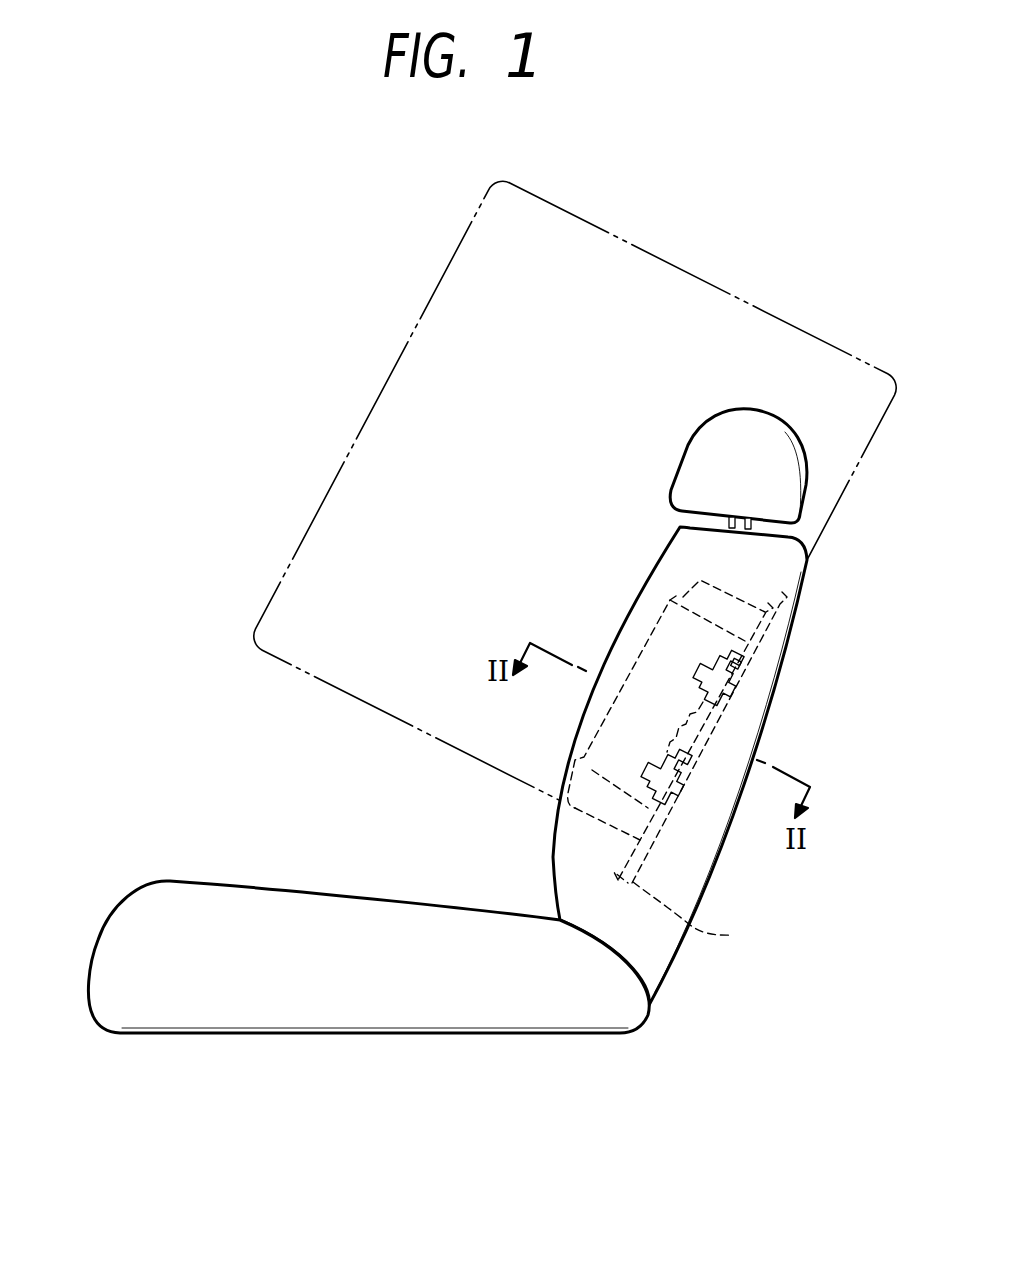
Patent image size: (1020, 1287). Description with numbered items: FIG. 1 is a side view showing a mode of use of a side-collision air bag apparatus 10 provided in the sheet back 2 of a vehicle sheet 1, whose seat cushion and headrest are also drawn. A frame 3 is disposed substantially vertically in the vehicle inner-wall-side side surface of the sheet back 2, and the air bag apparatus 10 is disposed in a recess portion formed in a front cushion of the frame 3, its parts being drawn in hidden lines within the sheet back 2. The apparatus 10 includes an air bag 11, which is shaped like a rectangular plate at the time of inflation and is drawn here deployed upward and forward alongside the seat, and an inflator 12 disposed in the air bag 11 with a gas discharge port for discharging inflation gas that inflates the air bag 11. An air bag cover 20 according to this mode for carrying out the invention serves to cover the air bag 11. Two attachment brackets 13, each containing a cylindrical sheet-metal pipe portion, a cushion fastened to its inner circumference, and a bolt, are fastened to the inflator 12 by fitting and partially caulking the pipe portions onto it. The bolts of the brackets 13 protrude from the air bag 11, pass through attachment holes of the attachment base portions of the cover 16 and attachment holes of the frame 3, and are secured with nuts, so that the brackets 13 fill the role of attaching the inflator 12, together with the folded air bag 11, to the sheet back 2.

The vehicle sheet 1 is at (498, 721).
The sheet back 2 is at (785, 548).
The frame 3 is at (692, 917).
The side-collision air bag apparatus 10 is at (678, 723).
The air bag 11 is at (416, 340).
The inflator 12 is at (707, 713).
The attachment bracket 13 is at (705, 682).
The cover 16 is at (672, 745).
The air bag cover 20 is at (737, 600).